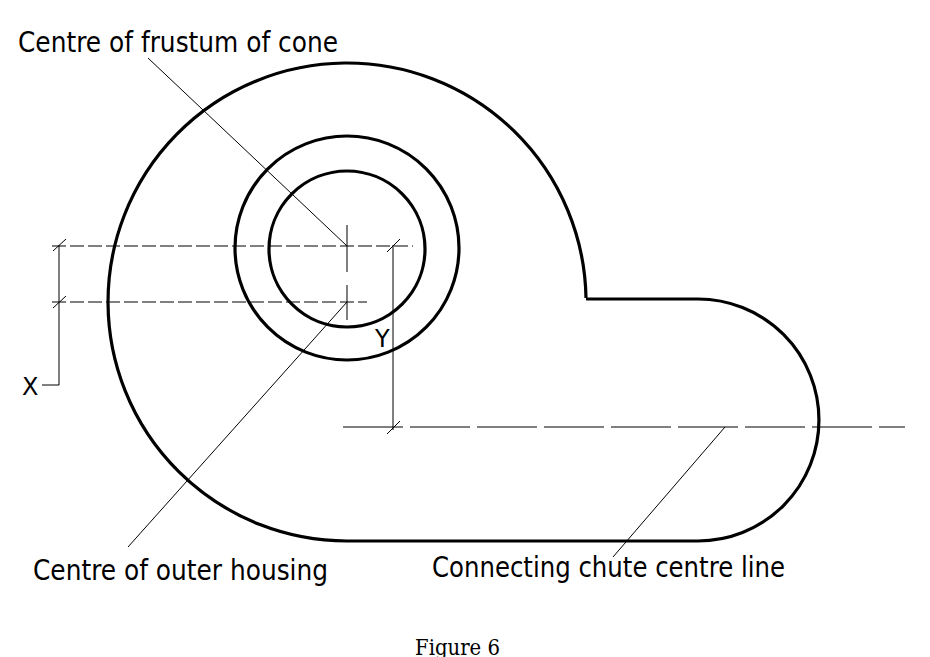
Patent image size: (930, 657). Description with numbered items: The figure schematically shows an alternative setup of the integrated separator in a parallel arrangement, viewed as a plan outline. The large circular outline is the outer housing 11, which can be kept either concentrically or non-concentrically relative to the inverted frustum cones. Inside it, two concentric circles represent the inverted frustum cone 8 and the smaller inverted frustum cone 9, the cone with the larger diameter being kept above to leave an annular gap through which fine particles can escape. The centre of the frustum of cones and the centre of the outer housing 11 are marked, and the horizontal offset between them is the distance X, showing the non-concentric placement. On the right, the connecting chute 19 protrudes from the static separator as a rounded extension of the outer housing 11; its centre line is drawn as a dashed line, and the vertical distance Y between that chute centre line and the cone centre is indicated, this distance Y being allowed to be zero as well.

The outer housing 11 is at (417, 68).
The connecting chute 19 is at (673, 299).
The inverted frustum cone 8 is at (410, 197).
The inverted frustum cone 9 is at (427, 247).